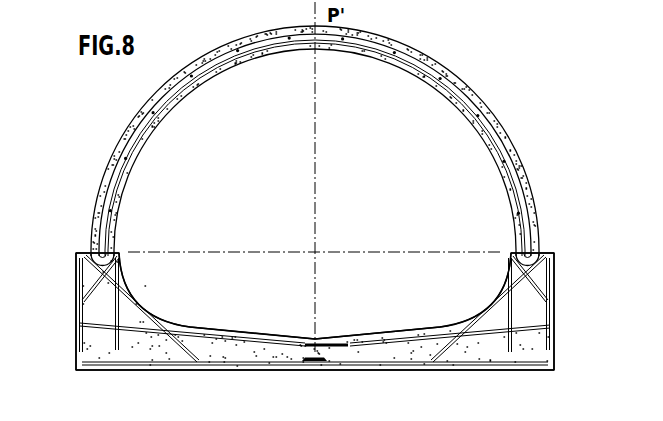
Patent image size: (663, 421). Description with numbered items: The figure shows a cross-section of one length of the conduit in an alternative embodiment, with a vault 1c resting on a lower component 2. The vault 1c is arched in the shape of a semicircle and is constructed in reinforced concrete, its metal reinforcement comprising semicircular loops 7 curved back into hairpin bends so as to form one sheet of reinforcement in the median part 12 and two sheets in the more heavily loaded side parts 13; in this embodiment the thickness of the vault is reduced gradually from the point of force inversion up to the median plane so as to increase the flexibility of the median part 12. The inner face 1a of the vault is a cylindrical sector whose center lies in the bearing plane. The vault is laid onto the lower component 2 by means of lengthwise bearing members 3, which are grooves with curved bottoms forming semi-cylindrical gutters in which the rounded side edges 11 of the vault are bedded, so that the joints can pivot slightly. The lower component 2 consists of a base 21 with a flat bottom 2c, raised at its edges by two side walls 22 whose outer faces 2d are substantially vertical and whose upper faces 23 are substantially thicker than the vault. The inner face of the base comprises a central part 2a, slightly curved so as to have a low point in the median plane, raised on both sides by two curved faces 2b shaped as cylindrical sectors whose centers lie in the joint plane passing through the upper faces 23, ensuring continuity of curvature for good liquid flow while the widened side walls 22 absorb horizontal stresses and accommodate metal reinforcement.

The inner face of the upper component 1a is at (536, 250).
The vault 1c is at (262, 36).
The lower component 2 is at (528, 312).
The central part of the inner face of the base 2a is at (243, 328).
The curved faces 2b is at (158, 313).
The flat bottom 2c is at (240, 372).
The outer faces of the side walls 2d is at (76, 328).
The lengthwise bearing members (grooves with curved bottoms) 3 is at (533, 262).
The semicircular loops 7 is at (197, 66).
The side edges of the upper component 11 is at (110, 258).
The median part of the vault 12 is at (322, 44).
The side parts of the vault 13 is at (133, 152).
The base 21 is at (377, 360).
The side walls 22 is at (95, 312).
The upper faces of the side walls 23 is at (84, 252).